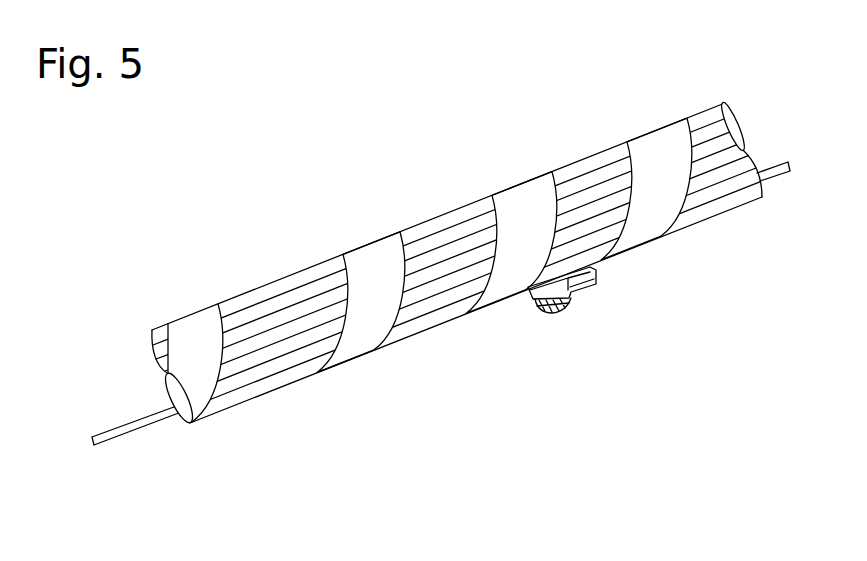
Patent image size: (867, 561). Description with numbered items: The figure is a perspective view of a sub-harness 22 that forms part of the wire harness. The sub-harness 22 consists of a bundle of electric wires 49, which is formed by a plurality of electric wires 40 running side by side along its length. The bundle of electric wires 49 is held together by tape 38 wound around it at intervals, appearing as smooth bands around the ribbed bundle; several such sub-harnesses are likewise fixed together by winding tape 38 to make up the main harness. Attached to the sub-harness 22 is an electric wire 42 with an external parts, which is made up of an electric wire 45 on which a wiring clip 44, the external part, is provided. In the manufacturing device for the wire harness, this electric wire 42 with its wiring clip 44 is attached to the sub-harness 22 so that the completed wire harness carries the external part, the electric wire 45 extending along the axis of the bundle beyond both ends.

The sub-harness 22 is at (441, 308).
The tape 38 is at (373, 262).
The electric wire 40 is at (450, 235).
The electric wire with an external parts 42 is at (621, 281).
The wiring clip 44 is at (563, 313).
The electric wire 45 is at (113, 432).
The bundle of electric wires 49 is at (304, 263).